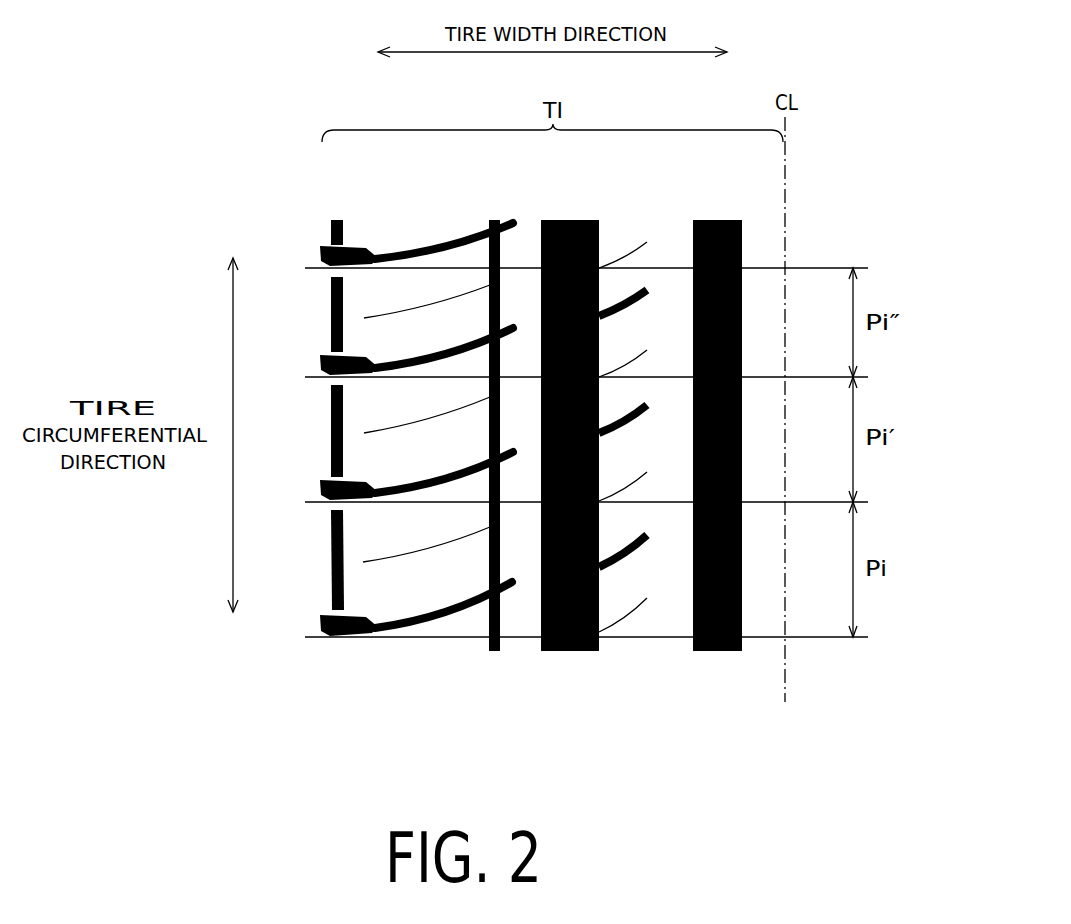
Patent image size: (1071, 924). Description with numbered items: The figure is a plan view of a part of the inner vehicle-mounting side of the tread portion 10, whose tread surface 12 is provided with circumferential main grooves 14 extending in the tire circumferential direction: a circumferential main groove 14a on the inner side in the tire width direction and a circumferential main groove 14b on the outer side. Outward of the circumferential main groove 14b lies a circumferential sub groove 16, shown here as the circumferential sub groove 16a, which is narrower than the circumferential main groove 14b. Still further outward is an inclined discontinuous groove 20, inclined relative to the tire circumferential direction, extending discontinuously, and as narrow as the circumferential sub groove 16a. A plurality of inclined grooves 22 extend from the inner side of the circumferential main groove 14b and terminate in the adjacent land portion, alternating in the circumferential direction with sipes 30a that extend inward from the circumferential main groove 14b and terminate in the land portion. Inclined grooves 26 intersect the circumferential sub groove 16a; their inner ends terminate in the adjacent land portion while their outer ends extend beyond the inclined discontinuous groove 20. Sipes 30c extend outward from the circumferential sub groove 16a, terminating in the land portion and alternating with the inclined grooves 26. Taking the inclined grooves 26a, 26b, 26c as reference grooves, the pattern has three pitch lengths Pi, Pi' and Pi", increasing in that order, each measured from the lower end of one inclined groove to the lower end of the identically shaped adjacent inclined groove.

The pneumatic tire 10 is at (523, 247).
The tread surface 12 is at (586, 398).
The circumferential main grooves 14 is at (641, 479).
The circumferential main groove 14a is at (717, 652).
The circumferential main groove 14b is at (569, 652).
The circumferential narrow groove 16 is at (492, 479).
The circumferential sub groove 16a is at (494, 655).
The inclined discontinuous groove 20 is at (330, 582).
The inclined grooves 22 is at (643, 545).
The inclined grooves 26 is at (457, 607).
The inclined groove 26a is at (413, 615).
The inclined groove 26b is at (413, 482).
The inclined groove 26c is at (413, 358).
The sipes 30a is at (627, 615).
The sipes 30c is at (388, 561).